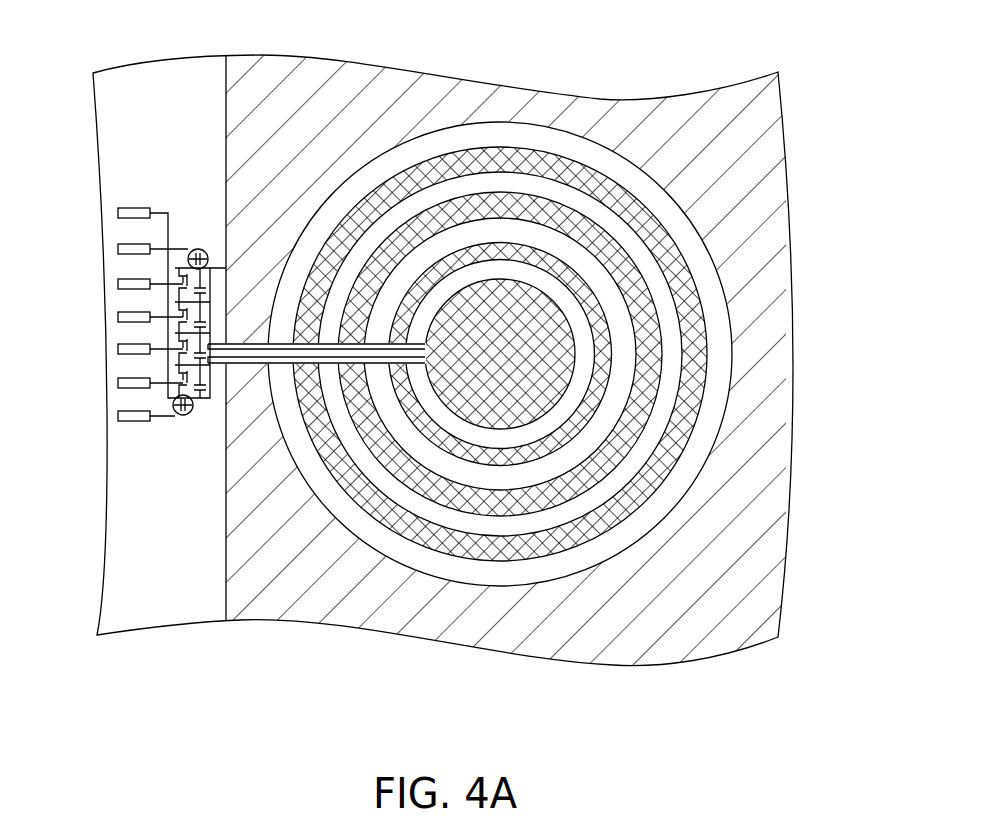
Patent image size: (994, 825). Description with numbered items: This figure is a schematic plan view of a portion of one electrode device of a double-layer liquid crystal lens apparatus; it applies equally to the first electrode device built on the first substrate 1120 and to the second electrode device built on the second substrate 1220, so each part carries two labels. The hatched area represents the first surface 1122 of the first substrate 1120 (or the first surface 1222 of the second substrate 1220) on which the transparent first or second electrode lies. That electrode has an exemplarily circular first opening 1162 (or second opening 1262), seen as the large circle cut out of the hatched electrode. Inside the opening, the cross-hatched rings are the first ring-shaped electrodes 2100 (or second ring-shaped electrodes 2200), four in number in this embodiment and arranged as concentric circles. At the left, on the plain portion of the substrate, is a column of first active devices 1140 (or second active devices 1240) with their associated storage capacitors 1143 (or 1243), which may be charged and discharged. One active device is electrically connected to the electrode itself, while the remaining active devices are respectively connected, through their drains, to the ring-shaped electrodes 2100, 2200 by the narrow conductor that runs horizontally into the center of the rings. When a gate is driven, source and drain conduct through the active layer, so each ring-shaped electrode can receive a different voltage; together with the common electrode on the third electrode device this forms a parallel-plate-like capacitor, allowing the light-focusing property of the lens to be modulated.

The first substrate 1120 is at (443, 337).
The second substrate 1220 is at (193, 90).
The first surface 1122 is at (540, 360).
The first surface 1222 is at (715, 415).
The first opening 1162 is at (561, 354).
The second opening 1262 is at (715, 302).
The first ring-shaped electrode 2100 is at (474, 308).
The second ring-shaped electrode 2200 is at (481, 293).
The storage capacitor 1143 is at (120, 304).
The storage capacitor 1243 is at (212, 250).
The first active device 1140 is at (130, 354).
The second active device 1240 is at (190, 416).